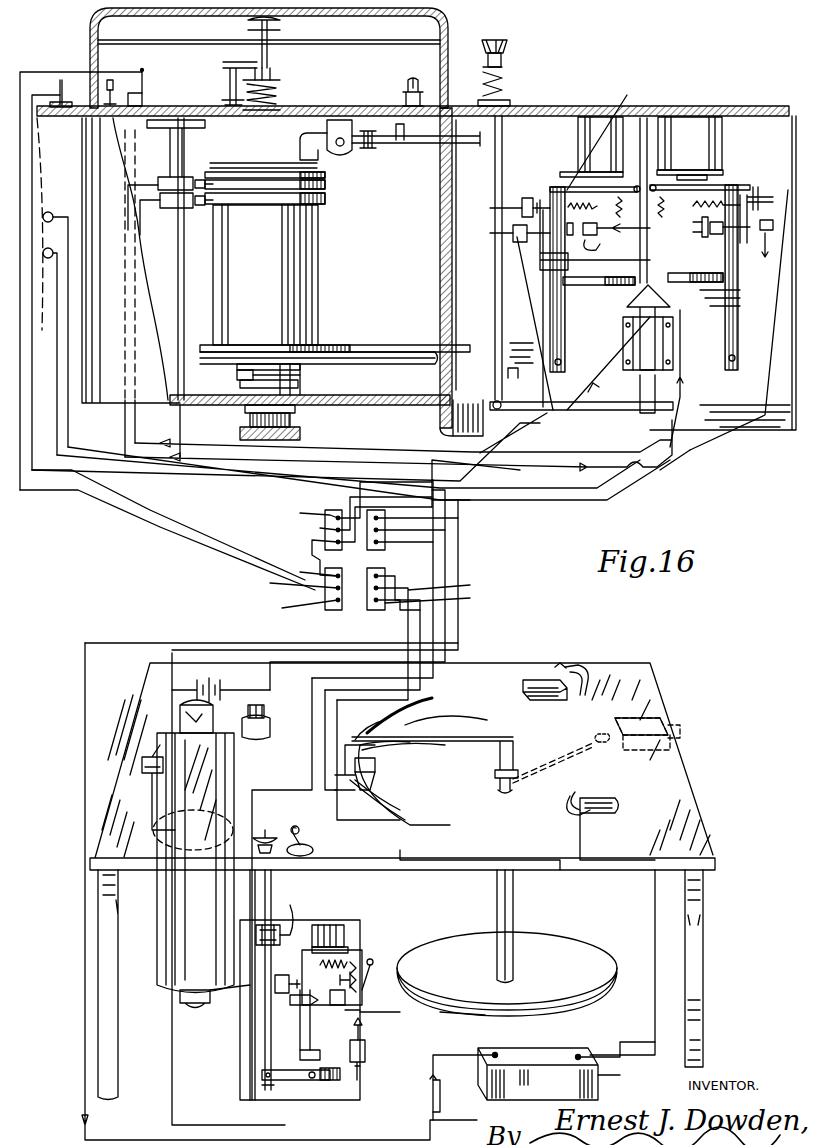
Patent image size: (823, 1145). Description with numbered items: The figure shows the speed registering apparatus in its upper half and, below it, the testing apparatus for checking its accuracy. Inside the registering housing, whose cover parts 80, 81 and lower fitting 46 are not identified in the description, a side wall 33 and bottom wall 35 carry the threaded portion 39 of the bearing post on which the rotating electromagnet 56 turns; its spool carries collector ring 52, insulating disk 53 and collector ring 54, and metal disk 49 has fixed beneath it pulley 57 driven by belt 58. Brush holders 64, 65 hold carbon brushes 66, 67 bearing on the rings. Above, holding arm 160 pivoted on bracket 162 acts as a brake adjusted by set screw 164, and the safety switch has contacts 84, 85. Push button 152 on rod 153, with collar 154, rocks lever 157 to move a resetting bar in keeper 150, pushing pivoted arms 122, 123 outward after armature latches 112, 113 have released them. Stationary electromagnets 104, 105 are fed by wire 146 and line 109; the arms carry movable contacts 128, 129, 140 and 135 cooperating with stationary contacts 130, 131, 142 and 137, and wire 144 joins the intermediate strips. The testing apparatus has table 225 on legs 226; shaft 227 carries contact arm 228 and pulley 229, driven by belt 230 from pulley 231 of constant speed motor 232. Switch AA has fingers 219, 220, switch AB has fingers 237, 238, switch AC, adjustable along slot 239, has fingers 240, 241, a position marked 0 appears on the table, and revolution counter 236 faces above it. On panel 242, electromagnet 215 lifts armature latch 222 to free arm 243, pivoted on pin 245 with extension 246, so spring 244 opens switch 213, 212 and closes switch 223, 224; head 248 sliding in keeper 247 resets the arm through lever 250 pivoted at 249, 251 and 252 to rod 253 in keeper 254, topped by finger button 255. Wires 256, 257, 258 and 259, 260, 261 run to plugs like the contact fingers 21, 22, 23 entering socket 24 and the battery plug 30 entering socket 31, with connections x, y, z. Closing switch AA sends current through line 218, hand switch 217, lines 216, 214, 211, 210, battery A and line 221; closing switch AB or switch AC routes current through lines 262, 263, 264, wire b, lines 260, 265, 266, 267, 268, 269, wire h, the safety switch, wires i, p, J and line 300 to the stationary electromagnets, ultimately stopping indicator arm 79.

The cover top 80 is at (192, 44).
The inner plate 79 is at (325, 48).
The cover side wall 81 is at (445, 58).
The base plate 104 is at (590, 100).
The contact post 85 is at (140, 96).
The contact bracket 84 is at (145, 85).
The screw 164 is at (410, 78).
The pivot bracket 162 is at (340, 120).
The rod 160 is at (365, 150).
The knob 152 is at (510, 44).
The spring 154 is at (505, 80).
The brush block 64 is at (162, 176).
The brush block 65 is at (178, 208).
The brush 66 is at (199, 178).
The brush 67 is at (198, 206).
The drum 56 is at (305, 248).
The ring 52 is at (325, 180).
The ring 53 is at (325, 192).
The ring 54 is at (325, 204).
The base plate of drum 49 is at (338, 344).
The plate 58 is at (385, 350).
The shaft 57 is at (385, 362).
The bottom plate 35 is at (350, 395).
The bearing 39 is at (236, 376).
The knurled knob 46 is at (240, 432).
The wall 33 is at (440, 266).
The column J is at (488, 302).
The bracket 153 is at (530, 323).
The coil 112 is at (627, 95).
The coil 146 is at (680, 125).
The column 140 is at (645, 120).
The coil flange 105 is at (692, 156).
The frame 109 is at (552, 186).
The frame 113 is at (720, 175).
The arm 128 is at (547, 185).
The contact 130 is at (528, 198).
The bar 144 is at (599, 292).
The armature 142 is at (608, 238).
The spring 137 is at (654, 209).
The armature 135 is at (702, 237).
The lever 129 is at (773, 163).
The contact 131 is at (770, 220).
The leg 122 is at (565, 322).
The leg 123 is at (735, 326).
The plate 150 is at (628, 340).
The bar 157 is at (581, 417).
The guide p is at (692, 396).
The wire 300 is at (714, 432).
The wire i is at (376, 450).
The wire h is at (62, 500).
The cable b is at (300, 542).
The terminal block 31 is at (325, 612).
The terminal block 30 is at (376, 611).
The wire 21 is at (325, 515).
The wire 22 is at (322, 527).
The wire 23 is at (312, 540).
The wire 24 is at (325, 512).
The wire x is at (307, 572).
The wire y is at (292, 584).
The wire z is at (299, 607).
The wire 256 is at (470, 512).
The wire 257 is at (462, 540).
The wire 258 is at (455, 557).
The wire 259 is at (394, 575).
The wire 260 is at (423, 635).
The wire 261 is at (443, 599).
The wire 269 is at (210, 643).
The wire 265 is at (172, 658).
The wire 268 is at (85, 937).
The console 225 is at (655, 675).
The leg 221 is at (655, 905).
The leg 226 is at (692, 930).
The cylinder 232 is at (165, 965).
The knob 231 is at (180, 1005).
The wire 266 is at (172, 1043).
The cylinder 240 is at (345, 748).
The switch 241 is at (355, 766).
The switch 255 is at (266, 830).
The lever 217 is at (312, 846).
The scale 262 is at (380, 700).
The dial 239 is at (430, 705).
The scale AC is at (440, 772).
The pointer 228 is at (510, 735).
The shaft 227 is at (515, 907).
The disc 229 is at (580, 952).
The disc rim 230 is at (470, 1022).
The wire 218 is at (540, 878).
The contact 219 is at (565, 785).
The contact block 220 is at (597, 795).
The arrow AA is at (588, 832).
The box 236 is at (660, 728).
The zero mark 0 is at (591, 702).
The contact 237 is at (590, 668).
The contact 238 is at (580, 660).
The block AB is at (548, 678).
The mechanism 210 is at (300, 1031).
The wire 251 is at (268, 1112).
The shaft 213 is at (266, 1020).
The rod 264 is at (248, 880).
The block 254 is at (255, 932).
The wire 214 is at (291, 910).
The coil 215 is at (325, 925).
The frame 216 is at (360, 920).
The wire 263 is at (385, 886).
The spring 242 is at (375, 935).
The spring 244 is at (380, 945).
The contact 222 is at (372, 963).
The contact 212 is at (286, 974).
The pivot 243 is at (380, 975).
The block 224 is at (385, 988).
The pawl 223 is at (380, 1002).
The wire 253 is at (265, 1012).
The rod 211 is at (300, 1040).
The block 245 is at (305, 1060).
The lever 252 is at (260, 1076).
The pivot 250 is at (310, 1080).
The rack 249 is at (334, 1082).
The bolt 247 is at (370, 1068).
The arrow 248 is at (373, 1030).
The bar 246 is at (395, 1017).
The battery A is at (600, 1075).
The wire 267 is at (443, 1100).